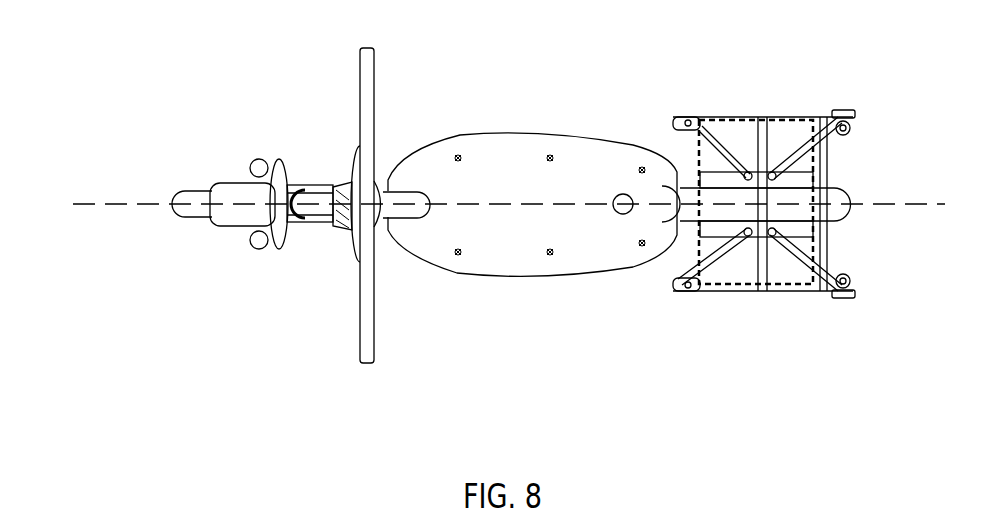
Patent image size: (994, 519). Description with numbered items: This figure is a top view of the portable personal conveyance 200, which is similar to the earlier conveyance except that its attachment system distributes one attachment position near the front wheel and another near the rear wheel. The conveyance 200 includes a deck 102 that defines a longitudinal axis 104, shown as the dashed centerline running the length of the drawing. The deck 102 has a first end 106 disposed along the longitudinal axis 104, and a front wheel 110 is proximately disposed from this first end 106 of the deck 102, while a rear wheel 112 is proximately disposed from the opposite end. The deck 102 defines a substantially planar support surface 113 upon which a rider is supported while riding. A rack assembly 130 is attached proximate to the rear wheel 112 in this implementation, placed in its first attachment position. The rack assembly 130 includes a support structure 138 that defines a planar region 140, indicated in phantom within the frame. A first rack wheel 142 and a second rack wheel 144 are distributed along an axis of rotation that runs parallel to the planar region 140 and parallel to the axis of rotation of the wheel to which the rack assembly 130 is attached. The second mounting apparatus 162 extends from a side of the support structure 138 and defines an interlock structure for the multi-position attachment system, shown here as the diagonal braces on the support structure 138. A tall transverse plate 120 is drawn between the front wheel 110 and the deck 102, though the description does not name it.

The conveyance 200 is at (228, 62).
The longitudinal axis 104 is at (137, 204).
The front wheel 110 is at (197, 192).
The plate 120 is at (367, 102).
The first end 106 is at (395, 237).
The deck 102 is at (480, 135).
The support surface 113 is at (509, 195).
The rack assembly 130 is at (713, 125).
The second mounting apparatus 162 is at (760, 143).
The support structure 138 is at (767, 153).
The first rack wheel 142 is at (840, 118).
The rear wheel 112 is at (813, 187).
The second rack wheel 144 is at (848, 287).
The planar region 140 is at (751, 271).